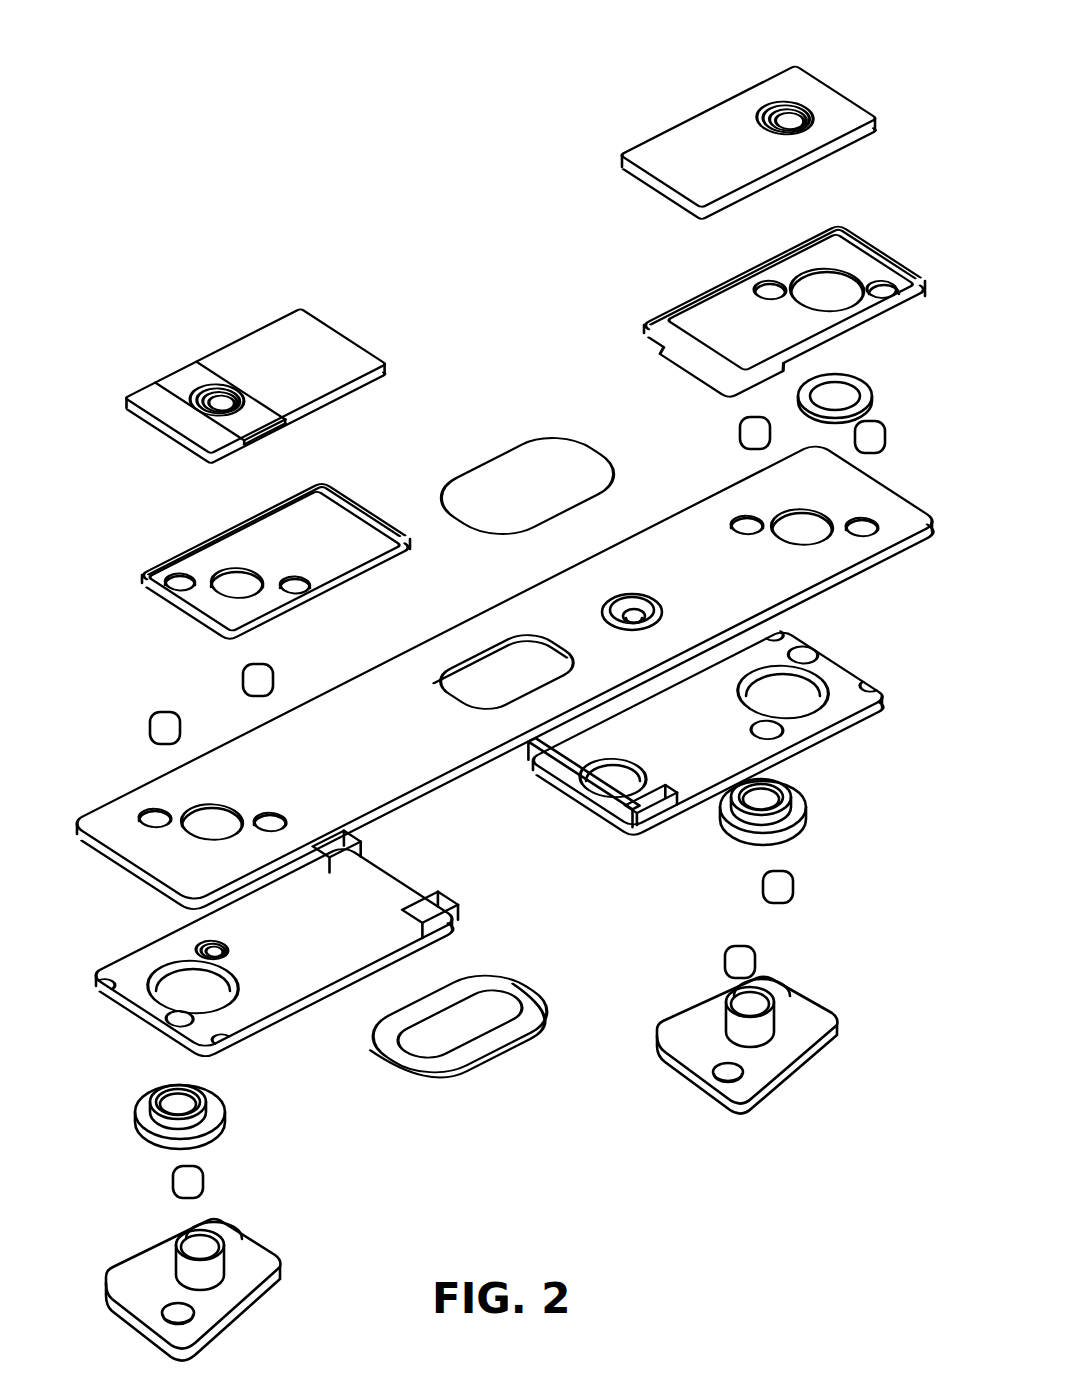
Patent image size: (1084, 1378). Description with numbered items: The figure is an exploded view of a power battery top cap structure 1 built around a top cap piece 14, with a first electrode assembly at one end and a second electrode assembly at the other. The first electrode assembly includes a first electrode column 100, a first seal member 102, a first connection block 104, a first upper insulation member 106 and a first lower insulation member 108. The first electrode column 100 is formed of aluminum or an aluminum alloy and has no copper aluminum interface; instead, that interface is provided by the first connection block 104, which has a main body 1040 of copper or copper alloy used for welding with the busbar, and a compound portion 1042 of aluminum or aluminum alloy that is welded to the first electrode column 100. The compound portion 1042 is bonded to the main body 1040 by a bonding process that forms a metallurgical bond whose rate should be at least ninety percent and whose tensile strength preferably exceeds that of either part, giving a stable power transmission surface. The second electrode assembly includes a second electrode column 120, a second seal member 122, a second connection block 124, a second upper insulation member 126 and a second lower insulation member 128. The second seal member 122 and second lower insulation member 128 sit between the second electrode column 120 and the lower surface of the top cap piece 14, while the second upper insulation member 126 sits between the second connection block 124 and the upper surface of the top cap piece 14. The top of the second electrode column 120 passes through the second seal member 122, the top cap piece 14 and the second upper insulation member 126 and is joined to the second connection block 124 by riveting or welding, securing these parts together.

The assembly 1 is at (368, 80).
The top cap piece 14 is at (155, 795).
The first electrode column 100 is at (136, 1272).
The first seal member 102 is at (148, 1120).
The first connection block 104 is at (255, 343).
The main body 1040 is at (290, 345).
The compound portion 1042 is at (219, 371).
The first upper insulation member 106 is at (175, 606).
The first lower insulation member 108 is at (135, 985).
The second electrode column 120 is at (790, 1010).
The second seal member 122 is at (803, 830).
The second connection block 124 is at (820, 108).
The second upper insulation member 126 is at (850, 262).
The second lower insulation member 128 is at (850, 670).